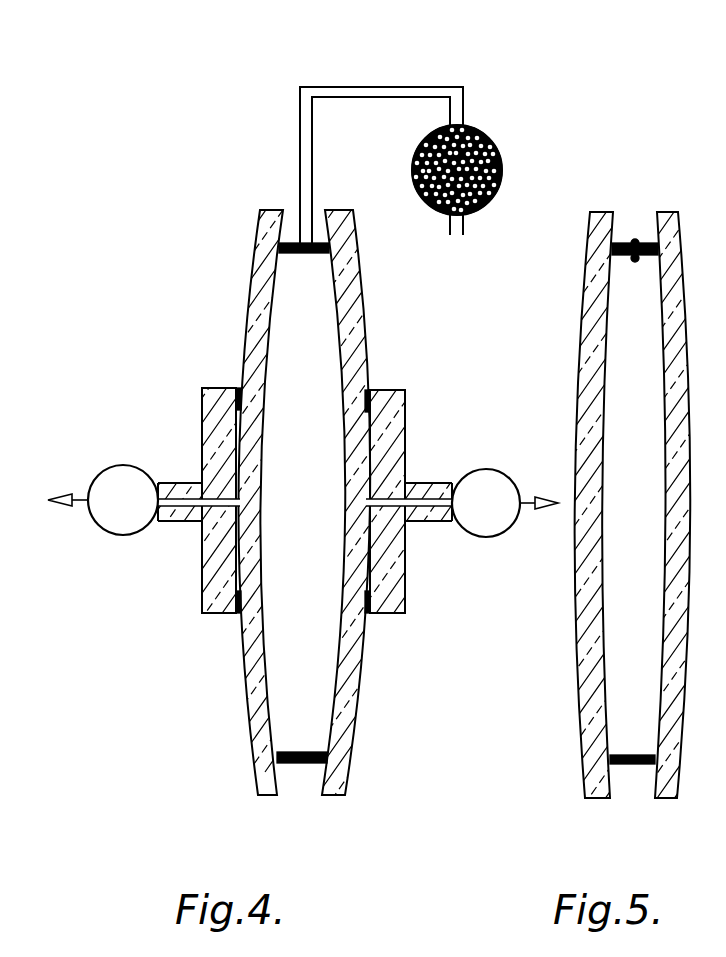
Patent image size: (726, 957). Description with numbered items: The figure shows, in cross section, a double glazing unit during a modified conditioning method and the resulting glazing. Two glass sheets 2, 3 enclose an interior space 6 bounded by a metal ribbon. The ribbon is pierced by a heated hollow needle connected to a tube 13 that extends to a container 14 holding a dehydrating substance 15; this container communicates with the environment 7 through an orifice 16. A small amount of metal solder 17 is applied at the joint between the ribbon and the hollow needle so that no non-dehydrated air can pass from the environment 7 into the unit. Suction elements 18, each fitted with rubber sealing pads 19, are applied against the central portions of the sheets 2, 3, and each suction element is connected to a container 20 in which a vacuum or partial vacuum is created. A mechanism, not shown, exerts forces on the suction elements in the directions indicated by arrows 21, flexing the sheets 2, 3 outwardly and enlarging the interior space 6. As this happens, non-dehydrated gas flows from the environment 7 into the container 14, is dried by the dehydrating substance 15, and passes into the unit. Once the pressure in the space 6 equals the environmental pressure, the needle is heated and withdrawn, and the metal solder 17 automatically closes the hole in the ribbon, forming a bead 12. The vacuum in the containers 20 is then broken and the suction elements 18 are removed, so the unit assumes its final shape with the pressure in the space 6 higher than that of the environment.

In FIG. 4, the sheet 2 is at (338, 705).
In FIG. 4, the sheet 3 is at (253, 680).
In FIG. 4, the interior space 6 is at (300, 300).
In FIG. 4, the environment 7 is at (503, 300).
In FIG. 5, the bead 12 is at (635, 243).
In FIG. 4, the tube 13 is at (341, 86).
In FIG. 4, the container 14 is at (474, 128).
In FIG. 4, the dehydrating substance 15 is at (503, 160).
In FIG. 4, the orifice 16 is at (455, 237).
In FIG. 4, the metal solder 17 is at (312, 240).
In FIG. 4, the suction element 18 is at (220, 440).
In FIG. 4, the rubber sealing pad 19 is at (238, 390).
In FIG. 4, the container 20 is at (130, 498).
In FIG. 4, the arrow 21 is at (75, 502).